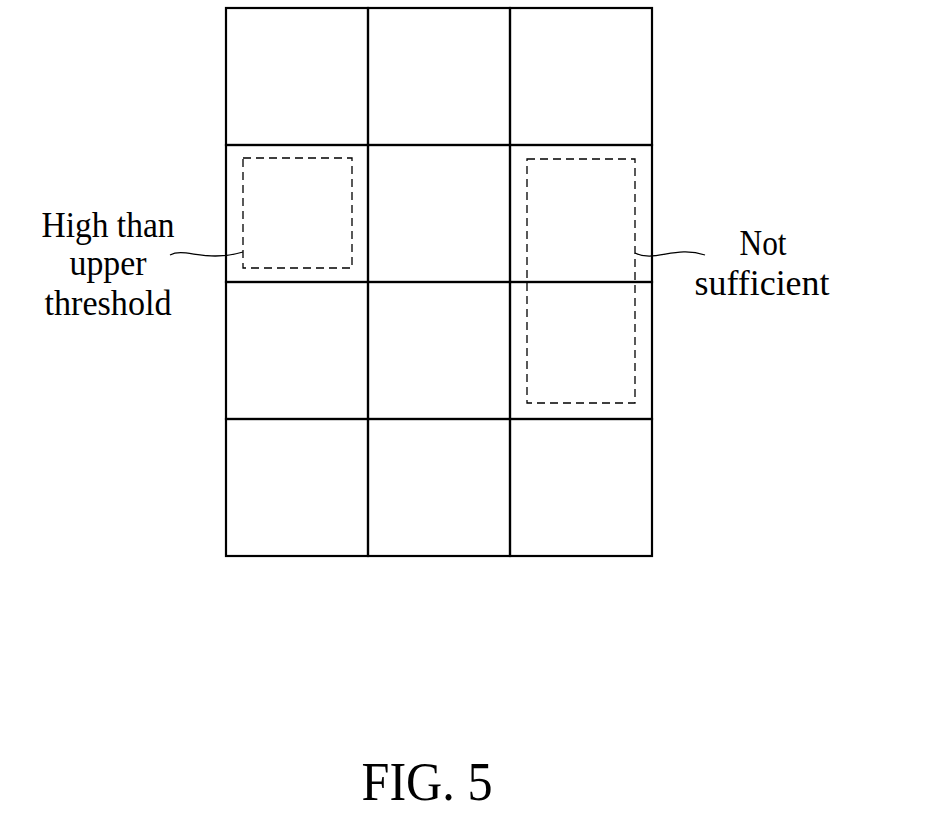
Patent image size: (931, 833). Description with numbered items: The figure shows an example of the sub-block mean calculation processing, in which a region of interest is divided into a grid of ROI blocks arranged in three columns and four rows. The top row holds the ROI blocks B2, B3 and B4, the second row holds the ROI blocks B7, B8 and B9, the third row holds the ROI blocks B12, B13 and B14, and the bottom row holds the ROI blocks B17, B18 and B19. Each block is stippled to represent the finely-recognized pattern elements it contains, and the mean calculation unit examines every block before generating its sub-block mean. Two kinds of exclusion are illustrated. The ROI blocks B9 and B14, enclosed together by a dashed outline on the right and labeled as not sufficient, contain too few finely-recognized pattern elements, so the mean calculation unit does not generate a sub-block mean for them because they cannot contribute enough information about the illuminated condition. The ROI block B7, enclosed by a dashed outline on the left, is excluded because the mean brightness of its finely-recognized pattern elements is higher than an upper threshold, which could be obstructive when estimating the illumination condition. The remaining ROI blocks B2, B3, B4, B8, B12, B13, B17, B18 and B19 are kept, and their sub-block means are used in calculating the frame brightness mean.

The block B2 is at (297, 76).
The block B3 is at (439, 76).
The block B4 is at (581, 76).
The ROI block B7 is at (297, 213).
The block B8 is at (439, 213).
The ROI block B9 is at (581, 213).
The block B12 is at (297, 350).
The block B13 is at (439, 350).
The ROI block B14 is at (581, 350).
The block B17 is at (297, 487).
The block B18 is at (439, 487).
The block B19 is at (581, 487).